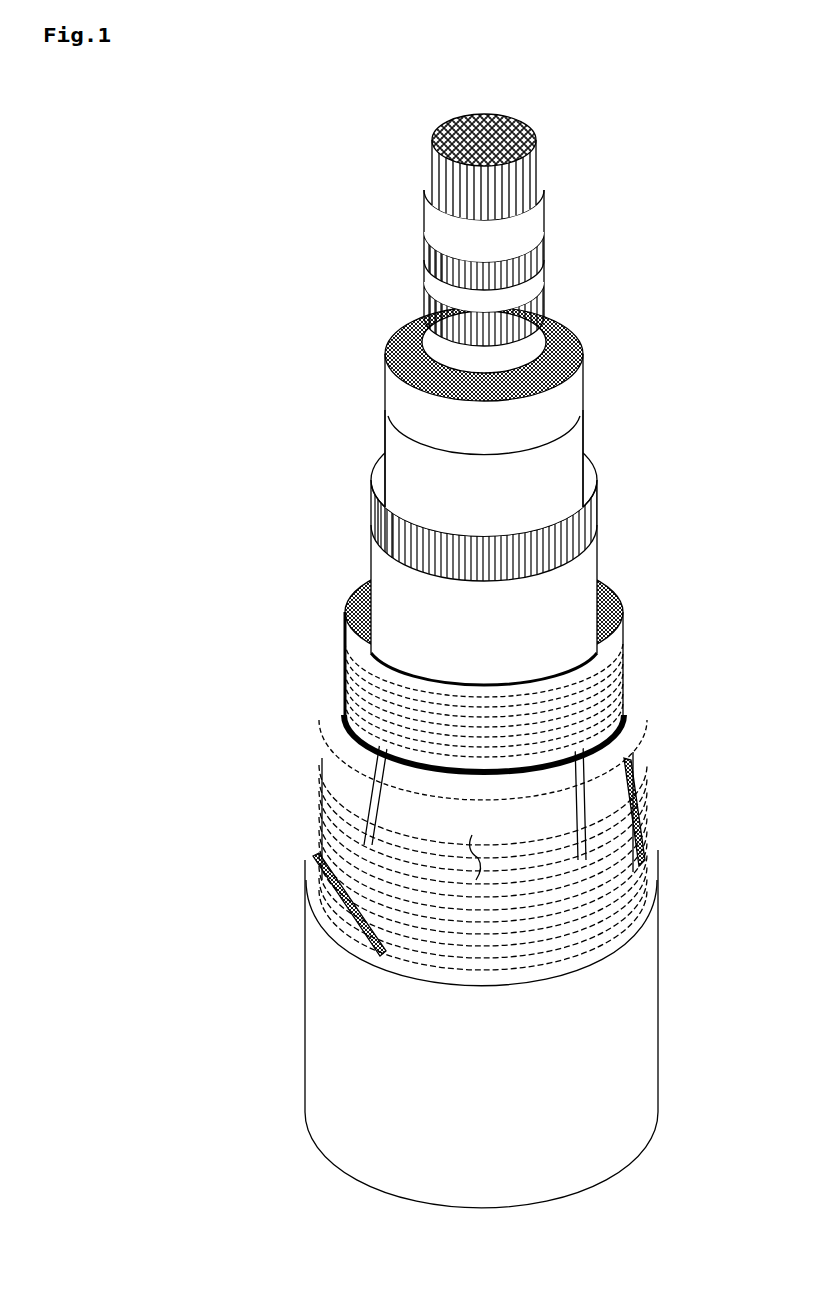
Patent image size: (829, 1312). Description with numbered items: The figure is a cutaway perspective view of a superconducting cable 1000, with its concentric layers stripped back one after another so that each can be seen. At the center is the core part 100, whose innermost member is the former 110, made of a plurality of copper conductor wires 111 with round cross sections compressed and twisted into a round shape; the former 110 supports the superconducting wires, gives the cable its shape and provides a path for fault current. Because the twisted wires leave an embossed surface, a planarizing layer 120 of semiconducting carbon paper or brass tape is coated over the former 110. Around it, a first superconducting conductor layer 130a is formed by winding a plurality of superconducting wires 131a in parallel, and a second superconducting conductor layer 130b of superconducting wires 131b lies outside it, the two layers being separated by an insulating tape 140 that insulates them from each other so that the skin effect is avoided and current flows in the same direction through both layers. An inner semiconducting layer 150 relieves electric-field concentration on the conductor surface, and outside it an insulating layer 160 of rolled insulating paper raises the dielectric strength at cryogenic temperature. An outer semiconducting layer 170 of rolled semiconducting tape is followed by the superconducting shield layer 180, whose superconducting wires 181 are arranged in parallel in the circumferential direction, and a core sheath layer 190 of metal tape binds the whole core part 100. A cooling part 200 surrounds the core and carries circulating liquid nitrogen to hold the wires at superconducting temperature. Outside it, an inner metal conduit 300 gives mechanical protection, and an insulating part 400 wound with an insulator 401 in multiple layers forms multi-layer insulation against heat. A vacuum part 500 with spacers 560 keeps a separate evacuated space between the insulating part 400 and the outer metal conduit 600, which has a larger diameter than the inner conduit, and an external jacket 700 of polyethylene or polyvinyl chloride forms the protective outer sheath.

The superconducting cable 1000 is at (372, 186).
The core part 100 is at (706, 584).
The conductor wires 111 is at (538, 130).
The former 110 is at (540, 170).
The planarizing layer 120 is at (545, 218).
The first superconducting conductor layer 130a is at (545, 252).
The superconducting wires 131a is at (425, 258).
The insulating tape 140 is at (545, 285).
The second superconducting conductor layer 130b is at (545, 310).
The superconducting wires 131b is at (425, 312).
The inner semiconducting layer 150 is at (565, 338).
The insulating layer 160 is at (540, 402).
The outer semiconducting layer 170 is at (540, 468).
The superconducting shield layer 180 is at (540, 548).
The metal foil 181 is at (372, 522).
The core sheath layer 190 is at (540, 580).
The cooling part 200 is at (540, 650).
The inner metal conduit 300 is at (598, 716).
The insulating part 400 is at (612, 768).
The insulator 401 is at (343, 678).
The spacer 560 is at (600, 813).
The vacuum part 500 is at (480, 855).
The outer metal conduit 600 is at (622, 870).
The external jacket 700 is at (650, 1003).